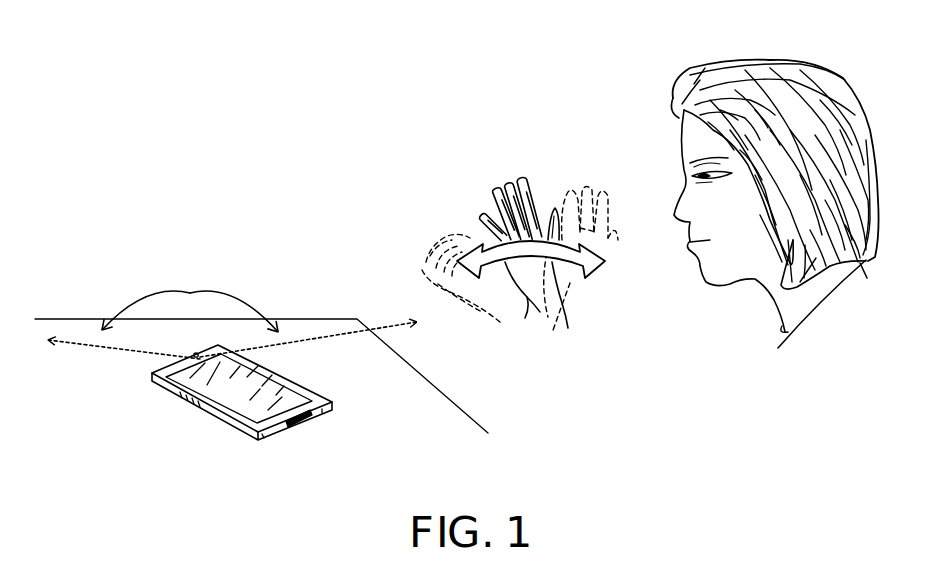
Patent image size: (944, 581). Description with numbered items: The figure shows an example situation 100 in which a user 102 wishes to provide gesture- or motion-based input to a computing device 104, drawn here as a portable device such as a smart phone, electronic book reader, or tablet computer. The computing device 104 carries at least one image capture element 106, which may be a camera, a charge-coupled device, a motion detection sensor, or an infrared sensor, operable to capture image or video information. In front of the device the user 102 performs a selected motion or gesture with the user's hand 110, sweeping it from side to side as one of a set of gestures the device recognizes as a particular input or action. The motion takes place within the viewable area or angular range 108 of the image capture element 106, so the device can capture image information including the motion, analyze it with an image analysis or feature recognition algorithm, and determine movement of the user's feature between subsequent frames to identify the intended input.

The example situation 100 is at (133, 100).
The user 102 is at (633, 118).
The computing device 104 is at (150, 385).
The image capture element 106 is at (195, 358).
The angular range 108 is at (232, 313).
The hand 110 is at (443, 187).